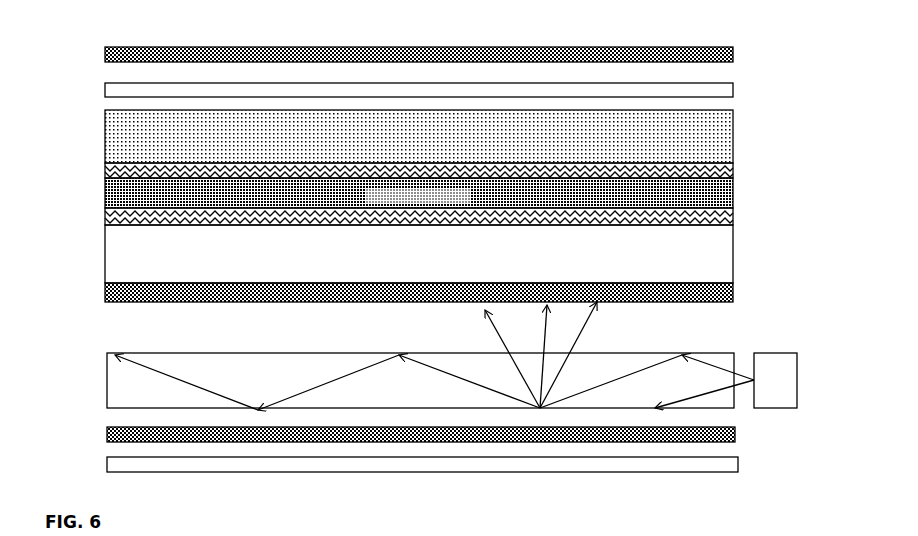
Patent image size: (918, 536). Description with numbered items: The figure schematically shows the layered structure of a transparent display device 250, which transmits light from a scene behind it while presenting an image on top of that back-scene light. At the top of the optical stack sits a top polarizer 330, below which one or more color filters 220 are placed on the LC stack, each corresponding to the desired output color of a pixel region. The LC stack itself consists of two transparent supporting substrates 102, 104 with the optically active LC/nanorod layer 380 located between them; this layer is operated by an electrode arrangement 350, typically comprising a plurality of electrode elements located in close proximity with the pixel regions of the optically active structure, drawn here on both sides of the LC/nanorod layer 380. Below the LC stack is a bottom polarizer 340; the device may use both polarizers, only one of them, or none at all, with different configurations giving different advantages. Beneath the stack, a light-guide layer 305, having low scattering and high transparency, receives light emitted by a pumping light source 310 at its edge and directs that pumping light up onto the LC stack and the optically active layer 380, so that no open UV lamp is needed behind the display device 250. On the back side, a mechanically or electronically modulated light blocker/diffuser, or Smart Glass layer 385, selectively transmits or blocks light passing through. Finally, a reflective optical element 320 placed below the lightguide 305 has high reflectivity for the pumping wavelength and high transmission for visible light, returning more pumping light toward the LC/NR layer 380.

The transparent display device 250 is at (90, 47).
The top polarizer 330 is at (441, 54).
The color filters 220 is at (441, 89).
The transparent supporting substrate 102 is at (441, 136).
The electrode arrangement 350 is at (441, 196).
The optically active LC/nanorod layer 380 is at (441, 193).
The transparent supporting substrate 104 is at (441, 254).
The bottom polarizer 340 is at (441, 292).
The light-guide layer 305 is at (407, 356).
The pumping light source 310 is at (782, 395).
The Smart Glass layer 385 is at (107, 436).
The reflective optical element 320 is at (400, 466).